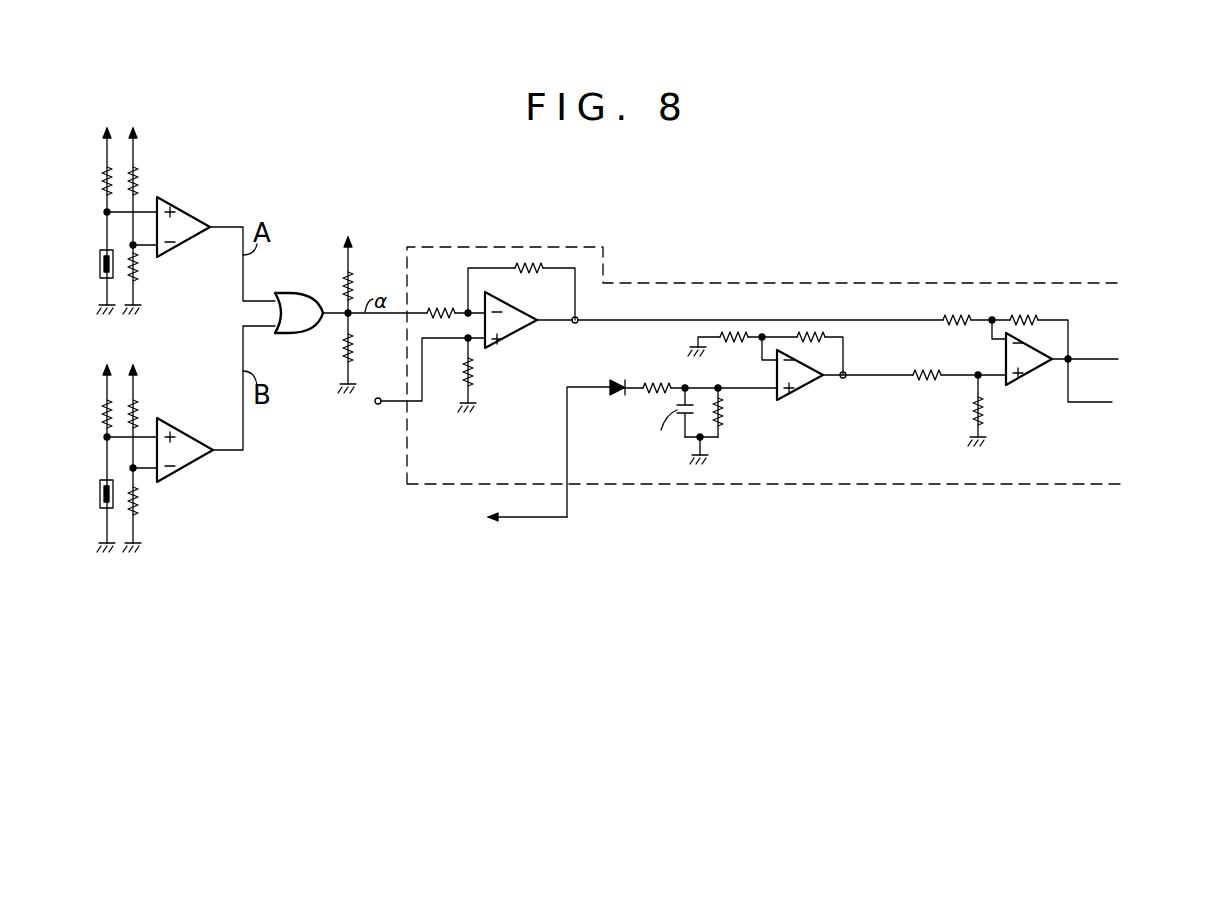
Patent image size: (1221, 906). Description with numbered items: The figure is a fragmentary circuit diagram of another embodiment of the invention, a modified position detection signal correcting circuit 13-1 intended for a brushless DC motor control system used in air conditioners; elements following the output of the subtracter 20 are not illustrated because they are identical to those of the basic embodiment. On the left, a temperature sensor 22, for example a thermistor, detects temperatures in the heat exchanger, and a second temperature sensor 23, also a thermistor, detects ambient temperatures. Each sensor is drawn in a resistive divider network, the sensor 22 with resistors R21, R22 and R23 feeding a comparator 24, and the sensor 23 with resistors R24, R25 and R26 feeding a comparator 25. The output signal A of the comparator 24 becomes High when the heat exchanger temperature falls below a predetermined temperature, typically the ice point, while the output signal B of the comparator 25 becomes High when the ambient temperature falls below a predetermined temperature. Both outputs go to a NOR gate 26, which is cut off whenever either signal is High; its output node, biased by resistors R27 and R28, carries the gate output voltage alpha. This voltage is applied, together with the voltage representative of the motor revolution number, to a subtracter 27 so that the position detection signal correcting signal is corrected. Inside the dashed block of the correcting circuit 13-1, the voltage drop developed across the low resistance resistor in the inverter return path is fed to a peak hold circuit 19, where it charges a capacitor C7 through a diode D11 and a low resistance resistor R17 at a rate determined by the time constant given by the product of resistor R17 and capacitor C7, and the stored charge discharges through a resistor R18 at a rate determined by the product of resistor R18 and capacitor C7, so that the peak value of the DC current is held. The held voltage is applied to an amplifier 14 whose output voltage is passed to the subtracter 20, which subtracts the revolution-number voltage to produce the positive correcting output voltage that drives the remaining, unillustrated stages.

The temperature sensor 22 is at (100, 268).
The temperature sensor 23 is at (100, 508).
The comparator 24 is at (187, 203).
The comparator 25 is at (187, 466).
The NOR gate 26 is at (322, 293).
The subtracter 27 is at (498, 343).
The position detection signal correcting circuit 13-1 is at (655, 283).
The amplifier 14 is at (795, 393).
The peak hold circuit 19 is at (709, 429).
The subtracter 20 is at (1033, 373).
The resistor R21 is at (95, 192).
The resistor R22 is at (153, 205).
The resistor R23 is at (159, 276).
The resistor R24 is at (89, 444).
The resistor R25 is at (153, 438).
The resistor R26 is at (155, 509).
The resistor R27 is at (364, 256).
The resistor R28 is at (367, 353).
The low resistance resistor R17 is at (662, 369).
The resistor R18 is at (723, 428).
The capacitor C7 is at (665, 415).
The diode D11 is at (619, 380).